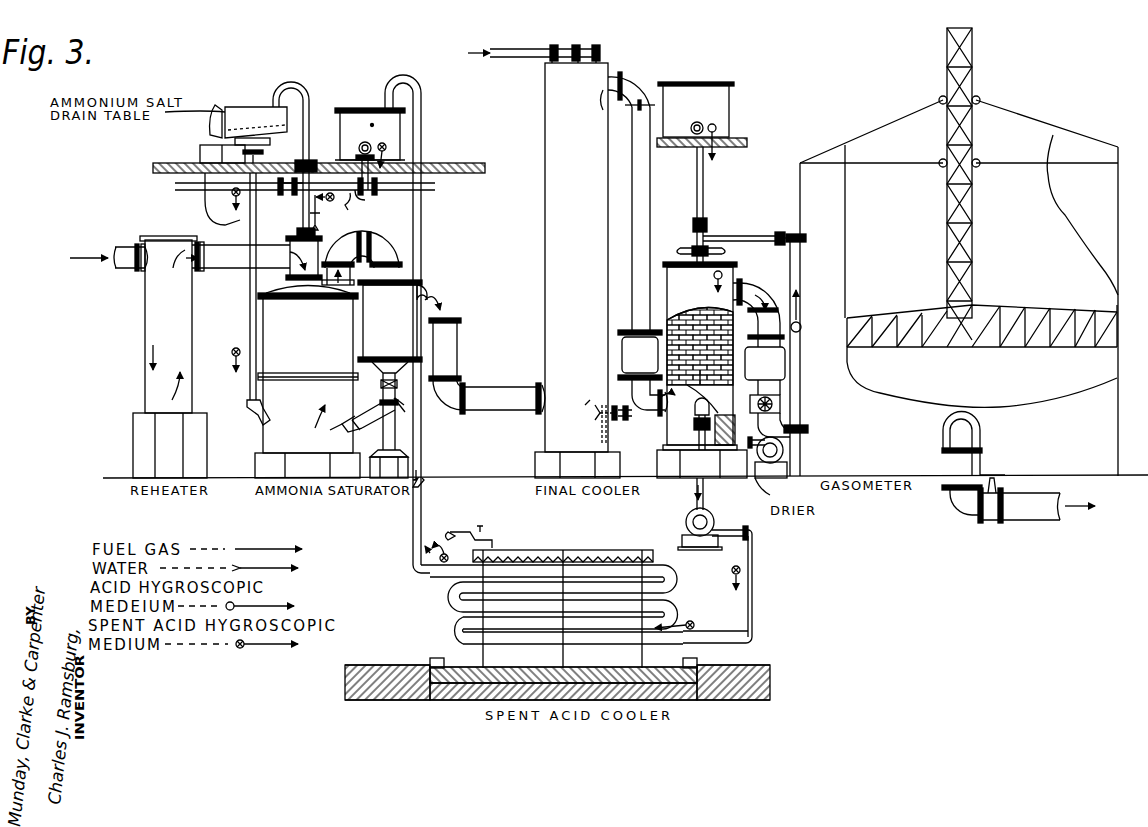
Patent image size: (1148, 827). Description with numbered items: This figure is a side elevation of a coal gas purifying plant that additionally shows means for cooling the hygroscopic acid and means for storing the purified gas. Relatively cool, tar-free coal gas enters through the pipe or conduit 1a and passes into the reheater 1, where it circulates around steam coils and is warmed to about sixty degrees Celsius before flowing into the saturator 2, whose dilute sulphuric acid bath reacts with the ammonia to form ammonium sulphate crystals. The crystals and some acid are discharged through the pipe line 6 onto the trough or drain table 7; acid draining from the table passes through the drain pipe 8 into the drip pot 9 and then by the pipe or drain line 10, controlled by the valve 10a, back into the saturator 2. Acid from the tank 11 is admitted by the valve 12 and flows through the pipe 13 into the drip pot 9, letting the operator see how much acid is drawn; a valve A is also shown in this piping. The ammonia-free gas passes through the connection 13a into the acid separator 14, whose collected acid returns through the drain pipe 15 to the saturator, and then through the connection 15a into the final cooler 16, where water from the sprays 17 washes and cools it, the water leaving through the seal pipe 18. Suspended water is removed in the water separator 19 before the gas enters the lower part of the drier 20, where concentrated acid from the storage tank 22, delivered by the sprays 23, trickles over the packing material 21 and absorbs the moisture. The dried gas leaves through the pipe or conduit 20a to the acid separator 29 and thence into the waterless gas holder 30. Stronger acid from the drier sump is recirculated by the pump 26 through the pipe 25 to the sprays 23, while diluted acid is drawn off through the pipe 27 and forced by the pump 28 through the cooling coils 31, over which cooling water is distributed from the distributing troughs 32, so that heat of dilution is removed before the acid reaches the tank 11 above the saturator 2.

The reheater 1 is at (170, 357).
The pipe or conduit 1a is at (122, 241).
The saturator 2 is at (307, 382).
The pipe line 6 is at (295, 95).
The trough or drain table 7 is at (245, 115).
The drain pipe 8 is at (212, 134).
The drip pot 9 is at (210, 206).
The pipe or drain line 10 is at (250, 326).
The valve 10a is at (264, 157).
The tank 11 is at (365, 100).
The valve 12 is at (356, 140).
The pipe 13 is at (360, 205).
The connection 13a is at (378, 252).
The acid separator 14 is at (402, 310).
The drain pipe or connection 15 is at (369, 425).
The connection 15a is at (456, 365).
The final cooler 16 is at (556, 385).
The sprays 17 is at (600, 56).
The seal pipe 18 is at (628, 420).
The water separator 19 is at (646, 373).
The drier 20 is at (702, 370).
The pipe or conduit 20a is at (766, 287).
The packing material 21 is at (728, 340).
The storage tank 22 is at (700, 83).
The sprays 23 is at (724, 250).
The pipe 25 is at (752, 234).
The pump 26 is at (773, 490).
The pipe 27 is at (428, 525).
The pump 28 is at (718, 512).
The acid separator 29 is at (767, 412).
The waterless gas holder 30 is at (951, 275).
The coils 31 is at (532, 572).
The distributing troughs 32 is at (540, 552).
The valve A is at (292, 218).